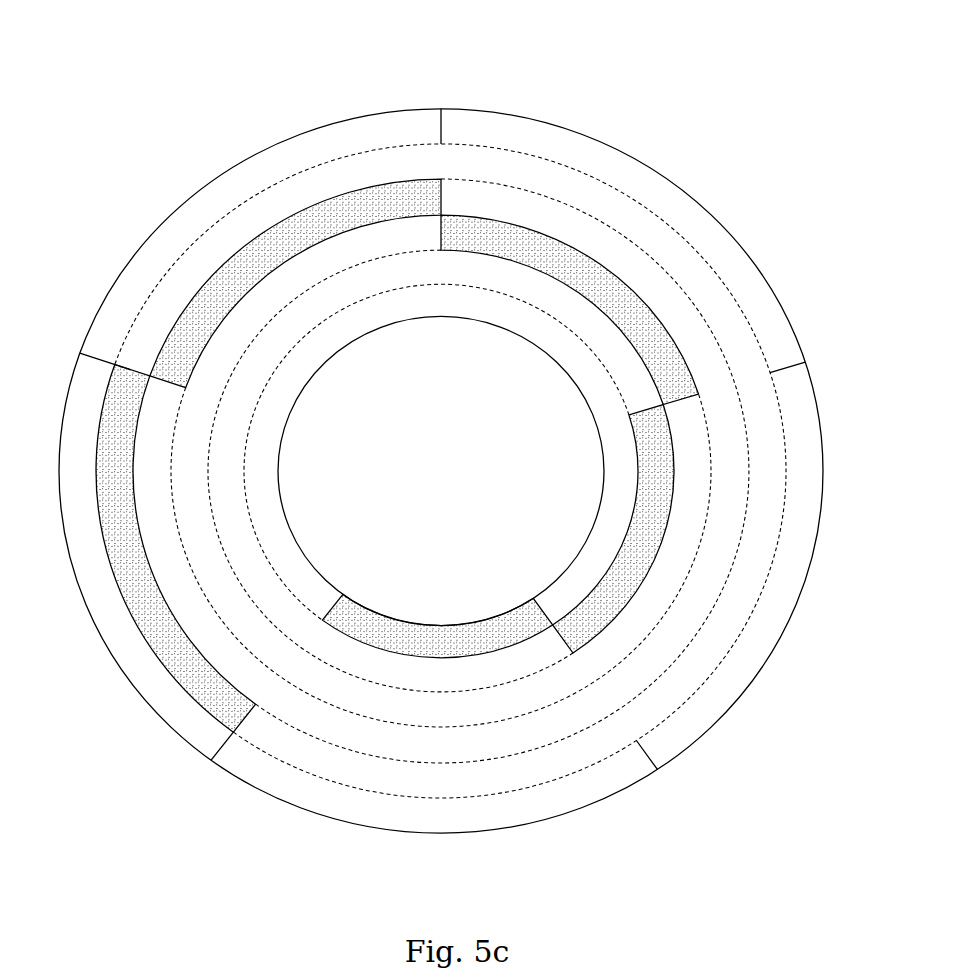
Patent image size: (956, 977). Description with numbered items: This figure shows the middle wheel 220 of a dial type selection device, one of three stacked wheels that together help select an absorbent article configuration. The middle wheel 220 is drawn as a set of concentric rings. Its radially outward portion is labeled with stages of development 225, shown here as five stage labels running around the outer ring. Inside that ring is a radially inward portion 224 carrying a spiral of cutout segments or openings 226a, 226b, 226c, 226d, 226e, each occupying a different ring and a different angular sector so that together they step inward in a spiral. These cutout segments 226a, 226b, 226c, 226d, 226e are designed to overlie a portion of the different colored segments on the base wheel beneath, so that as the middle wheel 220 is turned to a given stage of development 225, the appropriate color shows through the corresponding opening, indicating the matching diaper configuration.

The middle wheel 220 is at (175, 160).
The radially inward portion 224 is at (483, 327).
The stages of development 225 is at (495, 133).
The cutout segment 226a is at (118, 551).
The cutout segment 226b is at (202, 330).
The cutout segment 226c is at (630, 343).
The cutout segment 226d is at (633, 568).
The cutout segment 226e is at (433, 633).